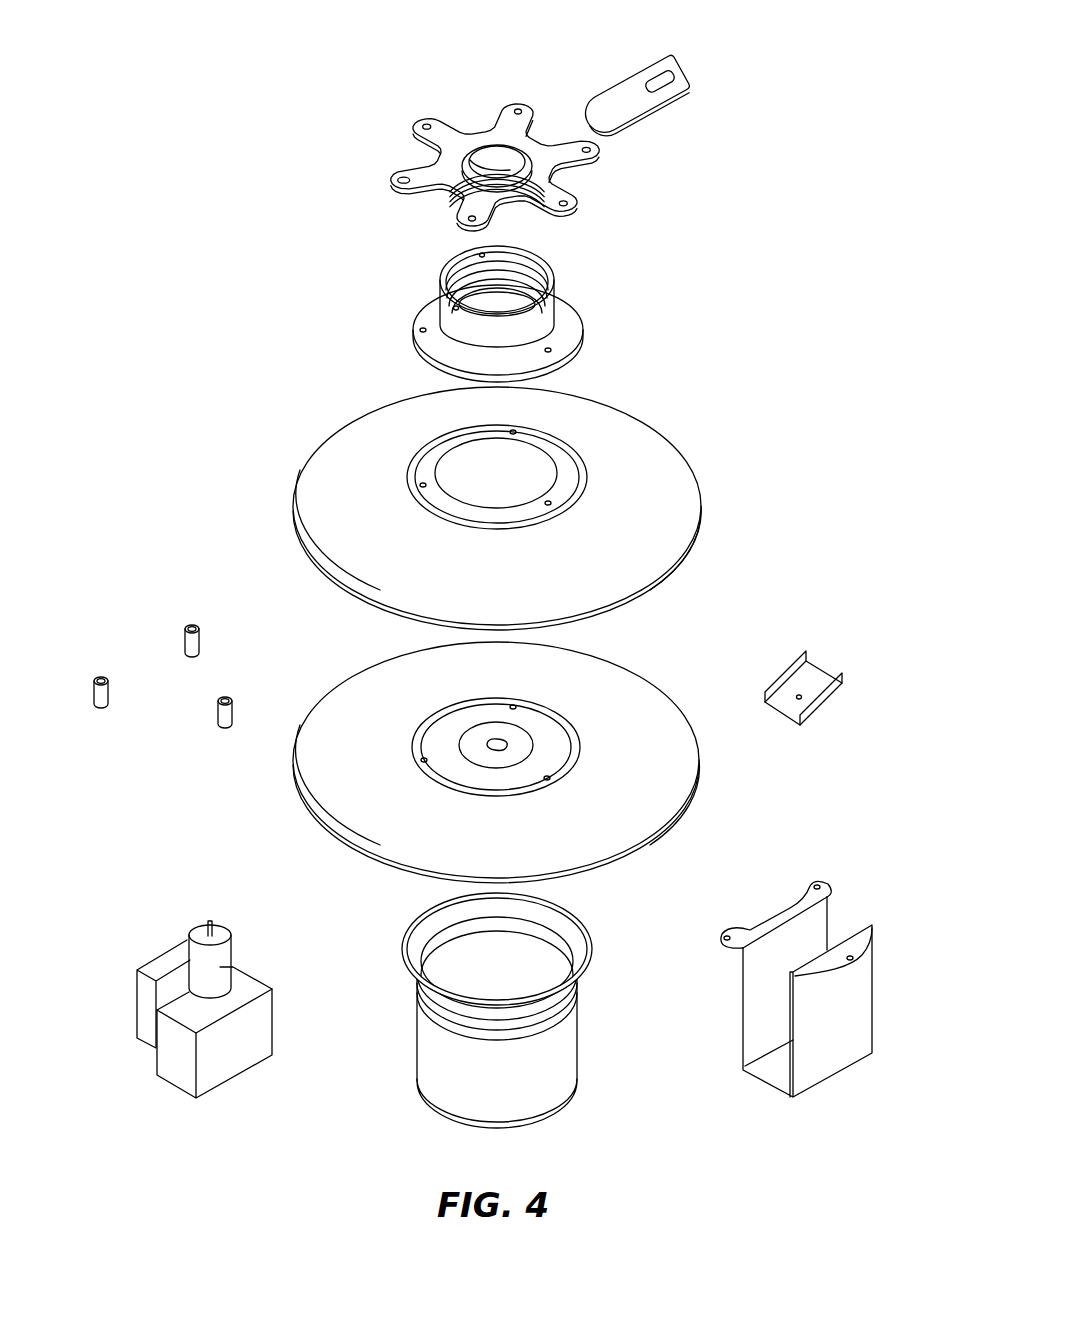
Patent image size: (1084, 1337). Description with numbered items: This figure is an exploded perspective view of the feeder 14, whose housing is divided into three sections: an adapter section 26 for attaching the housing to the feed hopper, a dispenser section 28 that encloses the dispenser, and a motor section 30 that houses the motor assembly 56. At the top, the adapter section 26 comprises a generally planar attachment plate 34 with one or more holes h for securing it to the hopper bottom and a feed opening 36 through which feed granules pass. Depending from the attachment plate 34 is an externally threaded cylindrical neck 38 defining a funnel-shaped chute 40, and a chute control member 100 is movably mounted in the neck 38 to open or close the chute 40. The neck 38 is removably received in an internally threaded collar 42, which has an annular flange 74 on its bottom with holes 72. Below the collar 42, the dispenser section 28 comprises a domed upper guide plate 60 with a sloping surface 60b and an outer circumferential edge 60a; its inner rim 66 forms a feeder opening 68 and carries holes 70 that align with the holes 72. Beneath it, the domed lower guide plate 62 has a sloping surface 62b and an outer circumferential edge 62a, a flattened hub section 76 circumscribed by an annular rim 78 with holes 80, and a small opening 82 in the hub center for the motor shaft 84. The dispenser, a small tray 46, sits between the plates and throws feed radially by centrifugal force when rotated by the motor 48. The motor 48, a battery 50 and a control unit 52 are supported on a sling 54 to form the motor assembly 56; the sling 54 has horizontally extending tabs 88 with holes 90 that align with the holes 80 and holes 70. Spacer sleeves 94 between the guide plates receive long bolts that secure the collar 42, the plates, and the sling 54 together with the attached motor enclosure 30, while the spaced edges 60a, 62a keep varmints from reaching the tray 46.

The feeder 14 is at (750, 233).
The adapter section 26 is at (338, 158).
The dispenser section 28 is at (737, 572).
The motor section 30 is at (562, 1068).
The attachment plate 34 is at (588, 186).
The feed opening 36 is at (490, 150).
The cylindrical neck 38 is at (523, 218).
The chute 40 is at (500, 170).
The holes h is at (396, 190).
The chute control member 100 is at (637, 95).
The collar 42 is at (547, 310).
The holes 72 is at (421, 331).
The annular flange 74 is at (445, 349).
The upper guide plate 60 is at (625, 450).
The outer circumferential edge 60a is at (700, 498).
The sloping surface 60b is at (368, 462).
The inner rim 66 is at (555, 458).
The feeder opening 68 is at (478, 484).
The holes 70 is at (512, 430).
The lower guide plate 62 is at (330, 703).
The outer circumferential edge 62a is at (690, 813).
The sloping surface 62b is at (360, 803).
The hub section 76 is at (544, 757).
The annular rim 78 is at (478, 792).
The holes 80 is at (513, 706).
The small opening 82 is at (499, 743).
The spacer sleeves 94 is at (215, 720).
The tray 46 is at (815, 690).
The motor assembly 56 is at (121, 927).
The motor shaft 84 is at (212, 925).
The motor 48 is at (216, 965).
The control unit 52 is at (147, 1001).
The battery 50 is at (260, 1038).
The sling 54 is at (801, 962).
The tabs 88 is at (740, 928).
The holes 90 is at (822, 882).